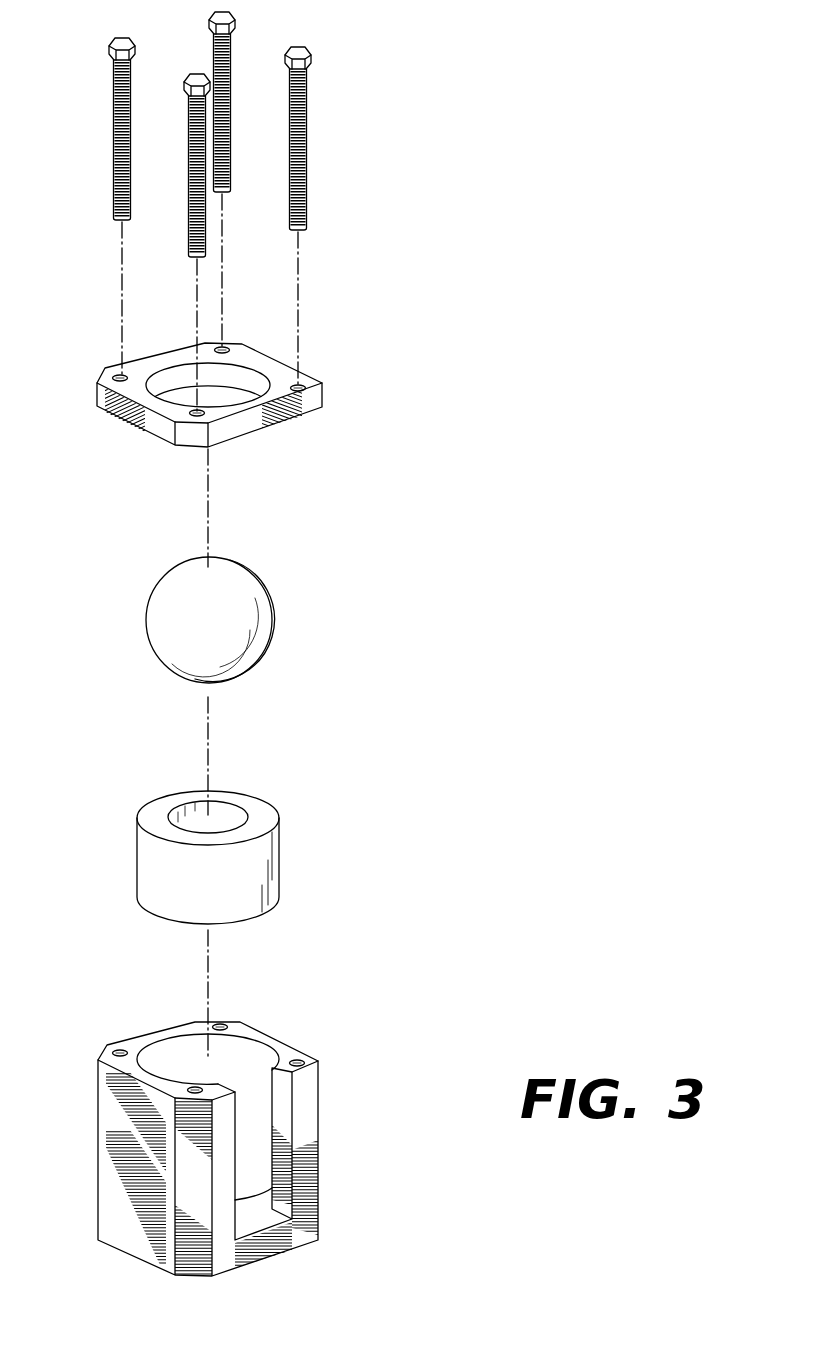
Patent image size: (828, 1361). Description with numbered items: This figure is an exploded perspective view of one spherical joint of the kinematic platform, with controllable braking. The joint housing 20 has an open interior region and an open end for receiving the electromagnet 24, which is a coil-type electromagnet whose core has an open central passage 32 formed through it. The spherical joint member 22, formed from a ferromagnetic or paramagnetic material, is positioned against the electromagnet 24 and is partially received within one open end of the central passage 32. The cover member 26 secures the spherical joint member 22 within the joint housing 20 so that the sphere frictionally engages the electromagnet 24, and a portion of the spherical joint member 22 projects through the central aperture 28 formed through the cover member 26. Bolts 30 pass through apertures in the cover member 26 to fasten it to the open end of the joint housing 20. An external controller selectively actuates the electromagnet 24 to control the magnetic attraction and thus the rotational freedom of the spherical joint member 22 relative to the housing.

The joint housing 20 is at (318, 1102).
The spherical joint member 22 is at (272, 620).
The electromagnet 24 is at (257, 825).
The cover member 26 is at (258, 367).
The central aperture 28 is at (250, 378).
The bolts 30 is at (356, 130).
The central passage 32 is at (225, 818).